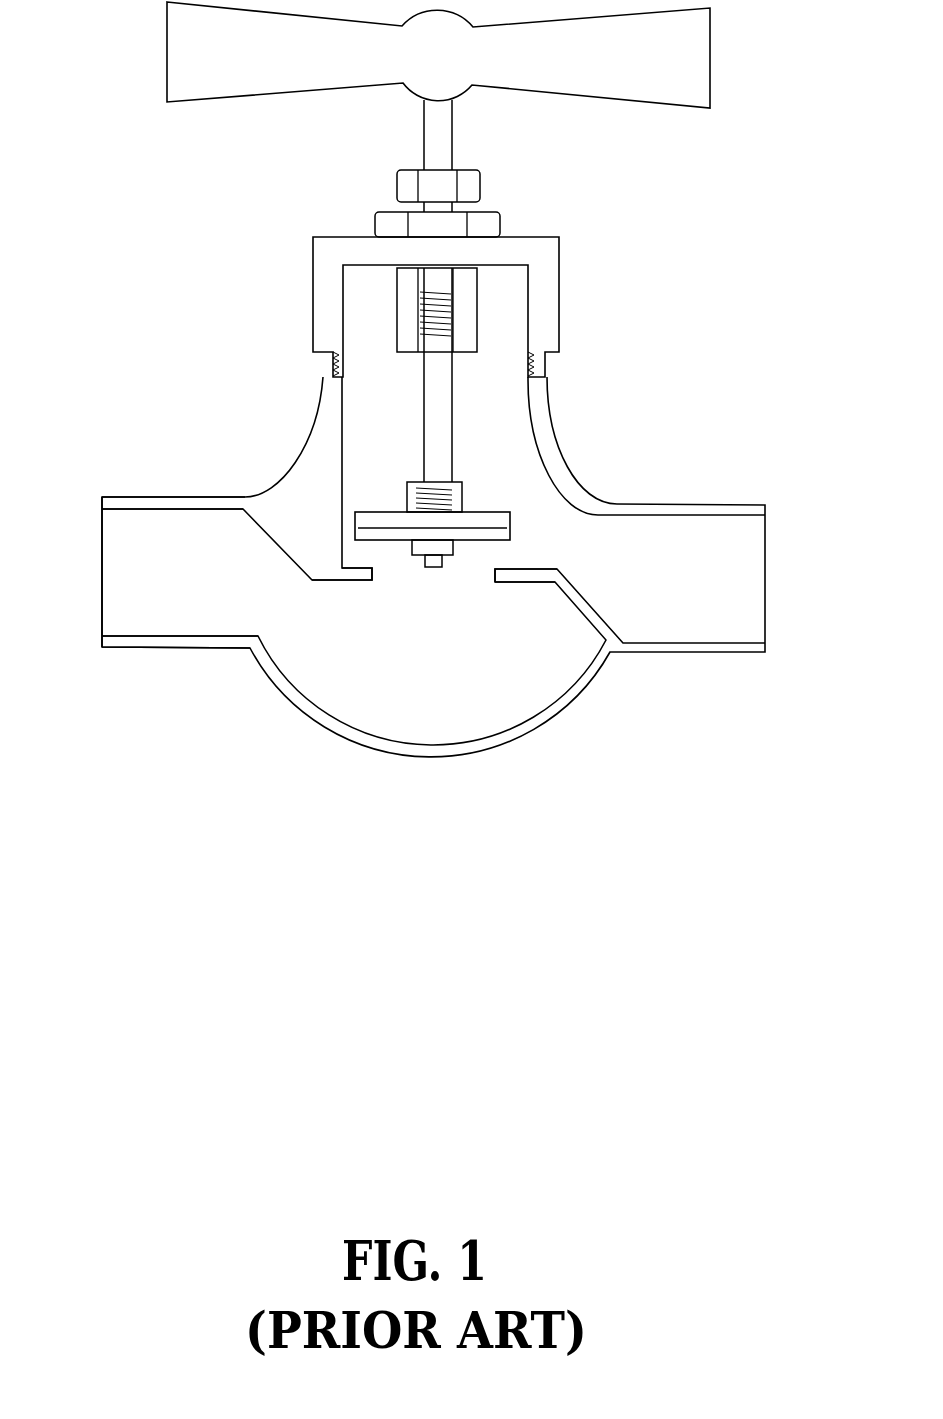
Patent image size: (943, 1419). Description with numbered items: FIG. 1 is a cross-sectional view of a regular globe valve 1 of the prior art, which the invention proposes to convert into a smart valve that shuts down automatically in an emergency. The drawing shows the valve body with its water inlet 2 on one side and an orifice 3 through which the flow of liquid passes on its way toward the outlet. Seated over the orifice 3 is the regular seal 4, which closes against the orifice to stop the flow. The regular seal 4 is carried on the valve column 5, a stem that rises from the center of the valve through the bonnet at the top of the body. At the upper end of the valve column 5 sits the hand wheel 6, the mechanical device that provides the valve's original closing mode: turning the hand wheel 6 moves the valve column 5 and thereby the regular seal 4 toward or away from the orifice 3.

The globe valve 1 is at (348, 740).
The water inlet 2 is at (210, 580).
The orifice 3 is at (467, 699).
The regular seal 4 is at (613, 561).
The valve column 5 is at (418, 390).
The hand wheel 6 is at (167, 56).